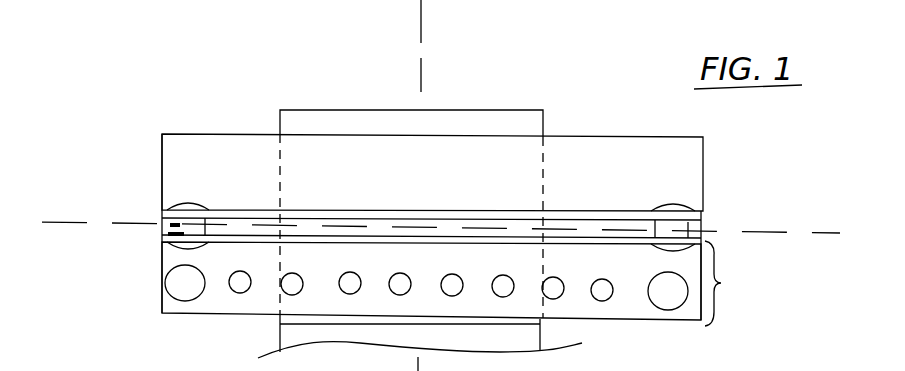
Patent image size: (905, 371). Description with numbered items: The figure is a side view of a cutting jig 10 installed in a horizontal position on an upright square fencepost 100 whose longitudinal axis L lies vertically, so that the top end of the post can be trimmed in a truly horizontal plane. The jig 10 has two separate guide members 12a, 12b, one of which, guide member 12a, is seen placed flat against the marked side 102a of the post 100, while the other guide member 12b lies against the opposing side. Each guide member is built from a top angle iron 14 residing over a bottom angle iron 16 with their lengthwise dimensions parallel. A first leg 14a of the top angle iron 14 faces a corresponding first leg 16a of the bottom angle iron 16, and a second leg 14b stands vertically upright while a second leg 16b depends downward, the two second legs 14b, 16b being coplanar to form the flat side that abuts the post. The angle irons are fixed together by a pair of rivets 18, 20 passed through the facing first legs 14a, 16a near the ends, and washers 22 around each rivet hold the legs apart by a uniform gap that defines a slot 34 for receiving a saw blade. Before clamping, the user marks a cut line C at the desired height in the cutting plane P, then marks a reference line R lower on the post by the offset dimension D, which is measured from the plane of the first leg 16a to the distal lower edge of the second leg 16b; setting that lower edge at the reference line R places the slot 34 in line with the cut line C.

The cutting jig 10 is at (178, 118).
The guide member 12a is at (157, 143).
The guide member 12b is at (122, 365).
The top angle iron 14 is at (589, 155).
The first leg of the top angle iron 14a is at (632, 215).
The second leg of the top angle iron 14b is at (703, 173).
The bottom angle iron 16 is at (632, 309).
The first leg of the bottom angle iron 16a is at (333, 244).
The second leg of the bottom angle iron 16b is at (587, 309).
The rivet 18 is at (190, 203).
The rivet 20 is at (676, 205).
The washer 22 is at (172, 226).
The slot 34 is at (263, 228).
The fencepost 100 is at (322, 106).
The side of the post 102a is at (388, 125).
The cut line C is at (464, 228).
The longitudinal axis L is at (429, 22).
The plane of the desired cut P is at (65, 220).
The reference line R is at (295, 323).
The offset dimension D is at (722, 283).